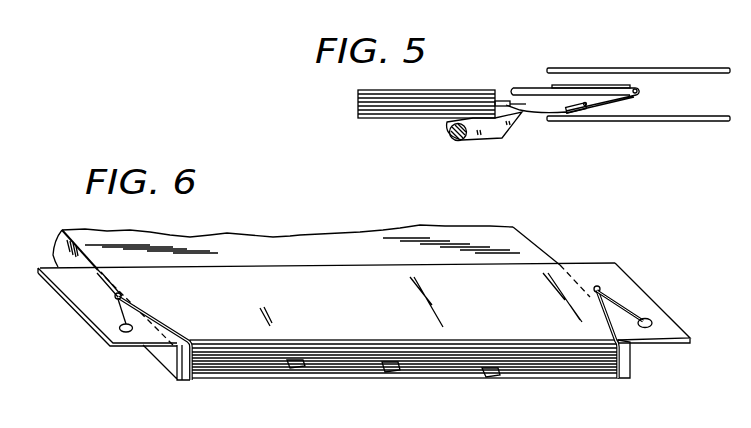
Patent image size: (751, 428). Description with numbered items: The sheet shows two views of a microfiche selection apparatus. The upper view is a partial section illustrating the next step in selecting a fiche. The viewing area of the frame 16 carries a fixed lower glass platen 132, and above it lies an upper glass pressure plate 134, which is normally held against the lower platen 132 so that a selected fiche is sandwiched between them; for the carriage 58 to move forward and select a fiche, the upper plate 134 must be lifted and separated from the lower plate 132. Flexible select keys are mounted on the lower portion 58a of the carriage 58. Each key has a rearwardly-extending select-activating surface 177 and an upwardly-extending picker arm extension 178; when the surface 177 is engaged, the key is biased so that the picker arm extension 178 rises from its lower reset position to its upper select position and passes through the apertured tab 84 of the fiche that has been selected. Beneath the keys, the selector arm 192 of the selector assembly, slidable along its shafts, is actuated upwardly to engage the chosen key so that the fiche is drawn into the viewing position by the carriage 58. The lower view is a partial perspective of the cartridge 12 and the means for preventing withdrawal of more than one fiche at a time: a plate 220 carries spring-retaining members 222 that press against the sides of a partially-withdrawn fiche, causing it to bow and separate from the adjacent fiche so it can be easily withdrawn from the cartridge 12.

In FIG. 6, the magazine or cartridge 12 is at (526, 230).
In FIG. 6, the frame 16 is at (428, 363).
In FIG. 5, the carriage 58 is at (596, 87).
In FIG. 5, the lower portion of carriage 58a is at (624, 100).
In FIG. 6, the apertured tab 84 is at (295, 370).
In FIG. 5, the lower glass platen 132 is at (703, 116).
In FIG. 5, the upper glass pressure plate 134 is at (713, 54).
In FIG. 5, the select-activating surface 177 is at (542, 112).
In FIG. 5, the picker arm extension 178 is at (506, 99).
In FIG. 5, the selector arm 192 is at (490, 139).
In FIG. 6, the plate 220 is at (358, 308).
In FIG. 6, the spring-retaining members 222 is at (181, 328).